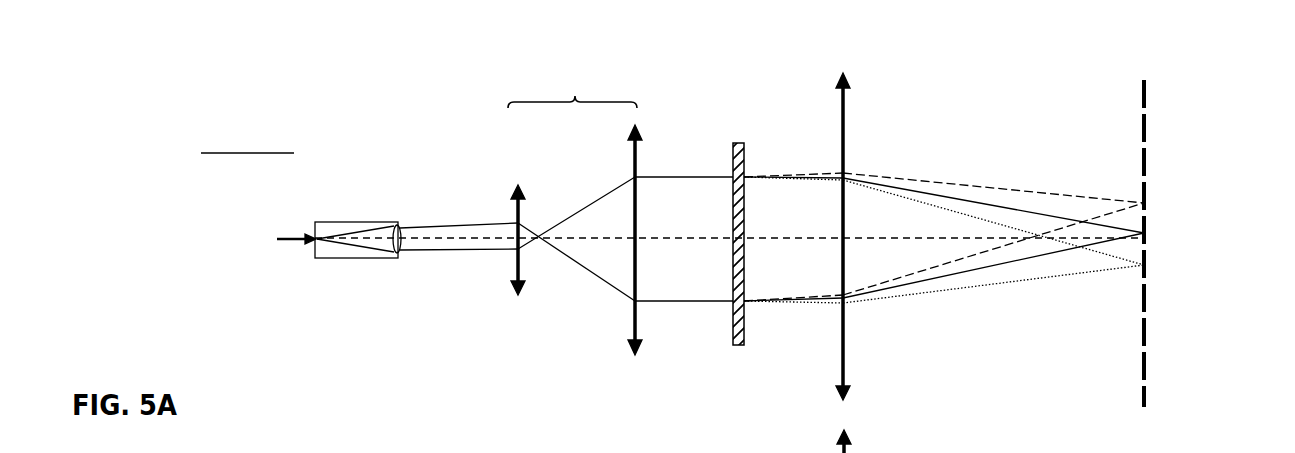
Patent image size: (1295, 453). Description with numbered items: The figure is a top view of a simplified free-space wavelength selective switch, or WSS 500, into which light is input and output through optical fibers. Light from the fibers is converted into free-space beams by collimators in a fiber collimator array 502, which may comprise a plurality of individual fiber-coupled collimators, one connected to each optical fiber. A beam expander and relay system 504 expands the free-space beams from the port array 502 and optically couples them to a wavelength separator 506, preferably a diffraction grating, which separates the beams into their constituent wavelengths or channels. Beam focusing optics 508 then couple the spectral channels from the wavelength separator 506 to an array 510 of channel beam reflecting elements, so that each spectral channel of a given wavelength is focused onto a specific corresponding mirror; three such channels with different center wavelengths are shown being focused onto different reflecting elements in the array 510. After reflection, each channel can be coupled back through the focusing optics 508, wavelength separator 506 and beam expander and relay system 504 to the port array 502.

The wavelength selective switch 500 is at (94, 96).
The fiber collimator array 502 is at (365, 222).
The beam expander and relay system 504 is at (575, 96).
The wavelength separator 506 is at (736, 142).
The beam focusing optics 508 is at (845, 107).
The array of channel beam reflecting elements 510 is at (1154, 98).